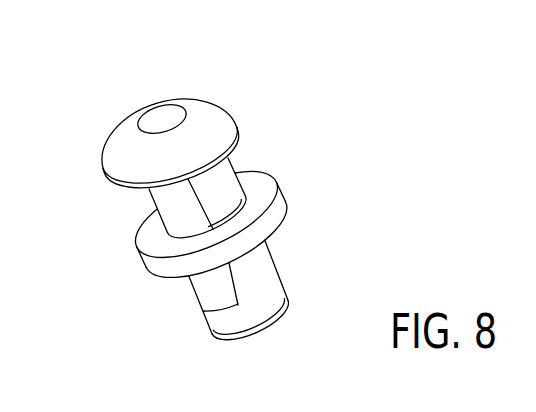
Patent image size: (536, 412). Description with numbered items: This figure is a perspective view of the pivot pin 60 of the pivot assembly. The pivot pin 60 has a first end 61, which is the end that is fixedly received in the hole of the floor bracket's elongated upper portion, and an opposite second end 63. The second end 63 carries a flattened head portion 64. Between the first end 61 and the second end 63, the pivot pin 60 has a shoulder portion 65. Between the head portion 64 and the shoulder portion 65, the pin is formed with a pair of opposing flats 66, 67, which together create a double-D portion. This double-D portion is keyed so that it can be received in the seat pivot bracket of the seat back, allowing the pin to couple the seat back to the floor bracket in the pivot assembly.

The pivot pin 60 is at (148, 321).
The end of pivot pin 61 is at (277, 320).
The second end 63 is at (169, 110).
The flattened head portion 64 is at (119, 150).
The shoulder portion 65 is at (267, 219).
The flat 66 is at (148, 192).
The flat 67 is at (222, 177).